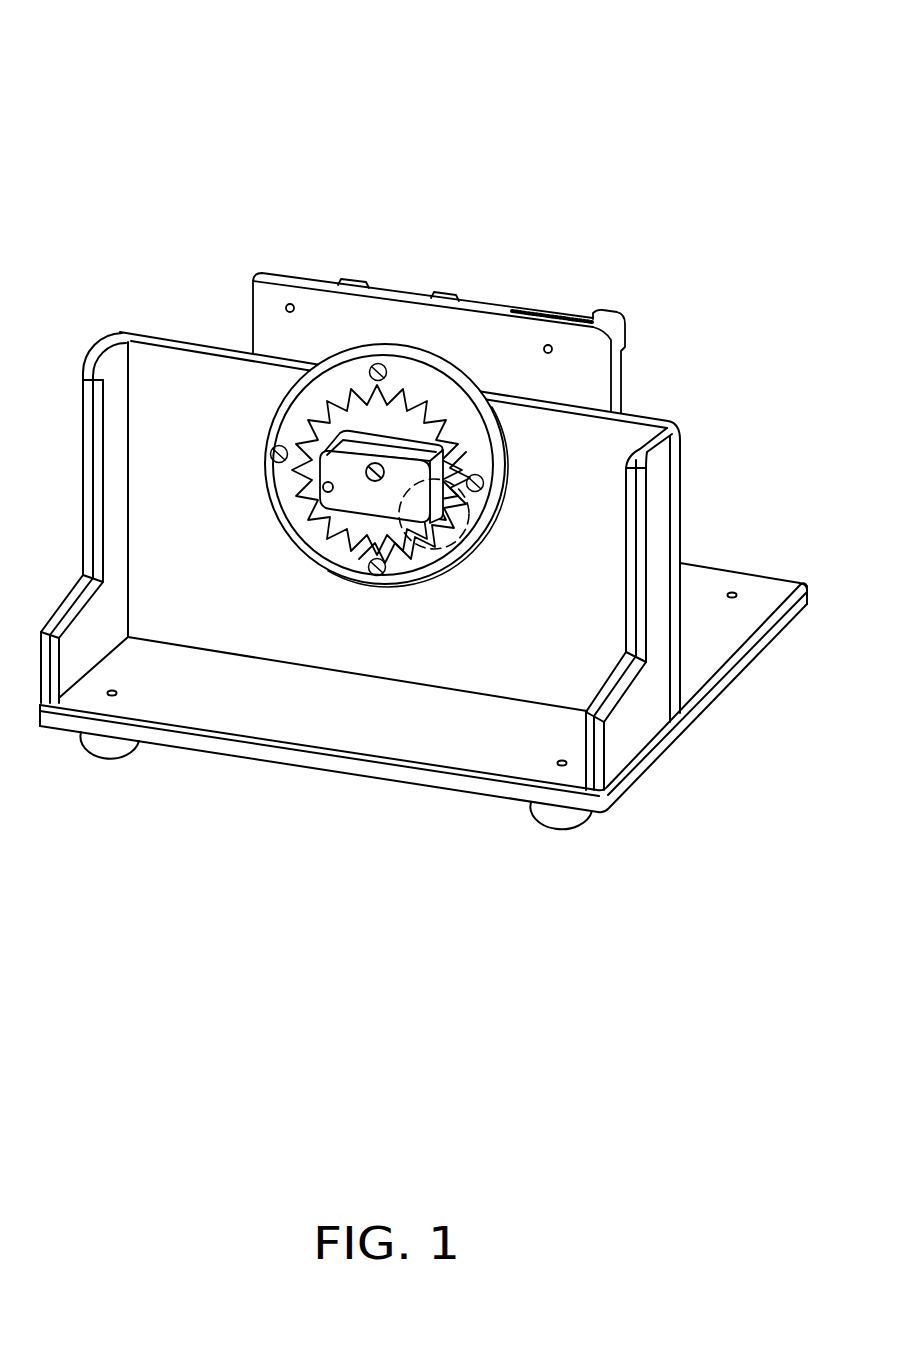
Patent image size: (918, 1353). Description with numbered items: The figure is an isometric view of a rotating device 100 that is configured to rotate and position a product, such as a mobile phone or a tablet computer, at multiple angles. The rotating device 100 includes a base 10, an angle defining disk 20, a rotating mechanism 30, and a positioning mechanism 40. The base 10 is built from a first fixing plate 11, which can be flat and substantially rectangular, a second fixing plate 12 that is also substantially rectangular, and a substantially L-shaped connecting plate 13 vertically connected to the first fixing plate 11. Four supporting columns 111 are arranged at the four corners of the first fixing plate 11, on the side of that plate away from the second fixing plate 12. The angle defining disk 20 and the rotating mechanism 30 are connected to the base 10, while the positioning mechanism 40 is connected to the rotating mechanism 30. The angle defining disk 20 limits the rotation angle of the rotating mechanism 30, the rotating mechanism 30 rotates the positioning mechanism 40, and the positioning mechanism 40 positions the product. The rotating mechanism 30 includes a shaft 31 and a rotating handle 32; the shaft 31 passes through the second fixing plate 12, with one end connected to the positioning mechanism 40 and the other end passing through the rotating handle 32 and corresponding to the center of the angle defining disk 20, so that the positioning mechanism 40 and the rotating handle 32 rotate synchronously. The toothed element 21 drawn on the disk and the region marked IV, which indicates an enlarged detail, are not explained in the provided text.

The rotating device 100 is at (312, 77).
The base 10 is at (622, 898).
The first fixing plate 11 is at (423, 707).
The supporting columns 111 is at (102, 743).
The second fixing plate 12 is at (522, 665).
The connecting plate 13 is at (623, 743).
The angle defining disk 20 is at (312, 388).
The ratchet gear 21 is at (305, 456).
The rotating mechanism 30 is at (518, 176).
The shaft 31 is at (375, 468).
The rotating handle 32 is at (400, 470).
The positioning mechanism 40 is at (573, 347).
The detail view indicator IV is at (478, 482).